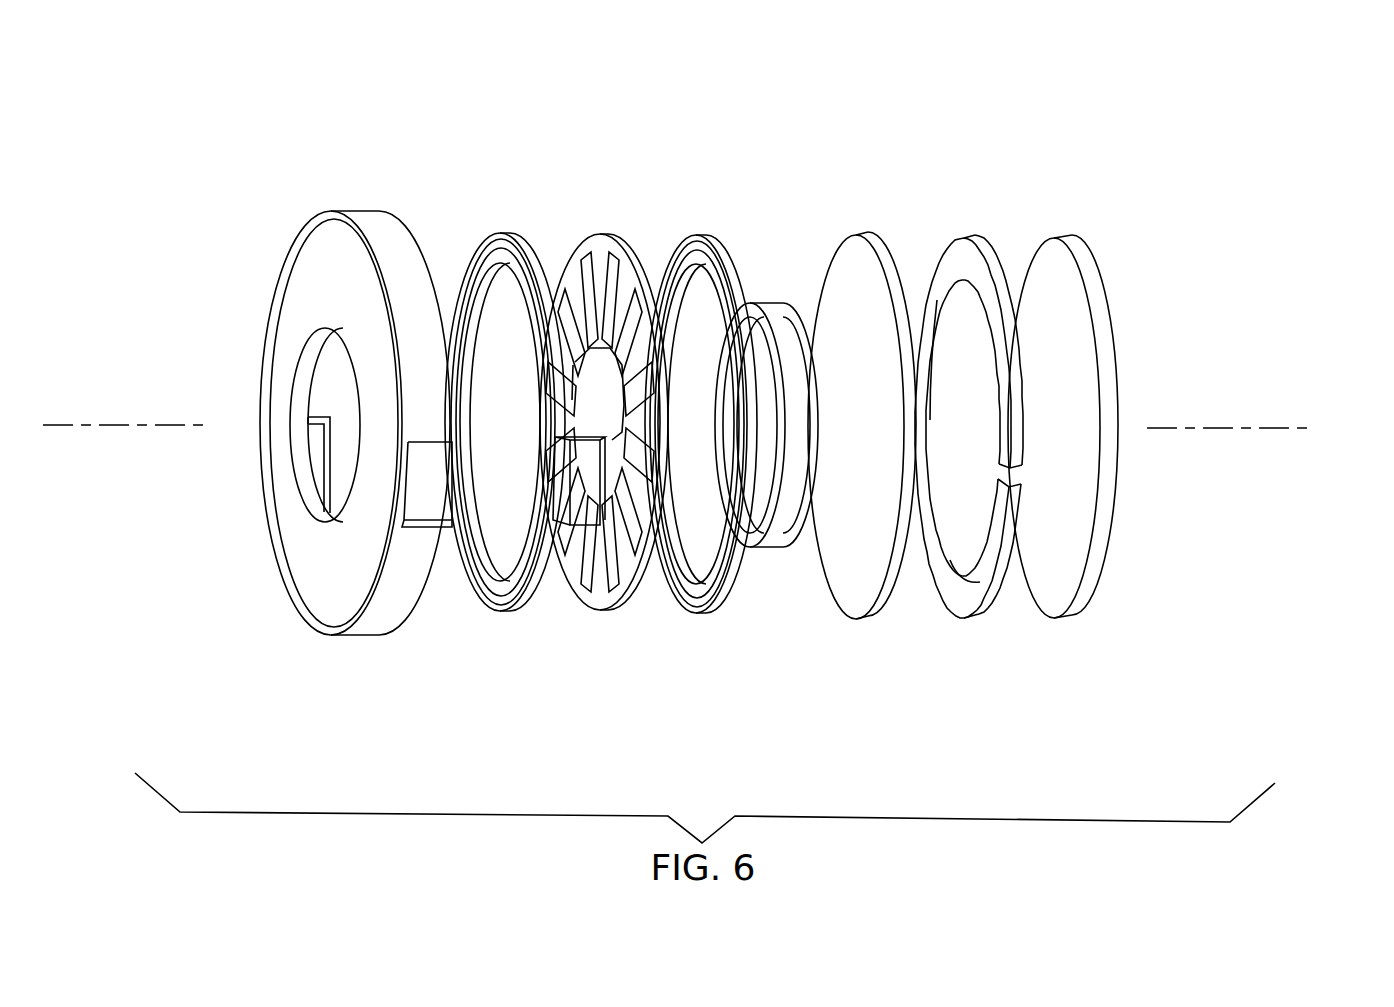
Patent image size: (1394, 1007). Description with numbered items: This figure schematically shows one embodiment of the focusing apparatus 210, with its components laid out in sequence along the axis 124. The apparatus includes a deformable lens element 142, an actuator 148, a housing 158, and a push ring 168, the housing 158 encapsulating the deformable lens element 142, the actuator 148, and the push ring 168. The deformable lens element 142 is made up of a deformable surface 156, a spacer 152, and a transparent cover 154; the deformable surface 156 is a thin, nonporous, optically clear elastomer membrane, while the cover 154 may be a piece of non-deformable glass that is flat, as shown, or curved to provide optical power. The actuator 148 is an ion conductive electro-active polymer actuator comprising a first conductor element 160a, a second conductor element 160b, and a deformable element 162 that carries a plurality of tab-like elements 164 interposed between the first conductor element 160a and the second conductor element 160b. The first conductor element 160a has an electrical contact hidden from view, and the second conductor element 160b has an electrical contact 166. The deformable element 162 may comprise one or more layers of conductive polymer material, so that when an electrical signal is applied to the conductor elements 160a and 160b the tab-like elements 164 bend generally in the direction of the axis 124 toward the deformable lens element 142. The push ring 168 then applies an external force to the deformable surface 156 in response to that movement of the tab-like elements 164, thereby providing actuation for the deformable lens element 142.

The focusing apparatus 210 is at (1145, 92).
The axis 124 is at (108, 425).
The actuator 148 is at (745, 235).
The deformable lens element 142 is at (1110, 242).
The housing 158 is at (315, 612).
The second conductor element 160b is at (500, 603).
The first conductor element 160a is at (712, 607).
The deformable element 162 is at (587, 605).
The tab-like elements 164 is at (620, 578).
The electrical contact 166 is at (573, 600).
The push ring 168 is at (765, 550).
The deformable surface 156 is at (900, 422).
The spacer 152 is at (965, 614).
The transparent cover 154 is at (1120, 367).